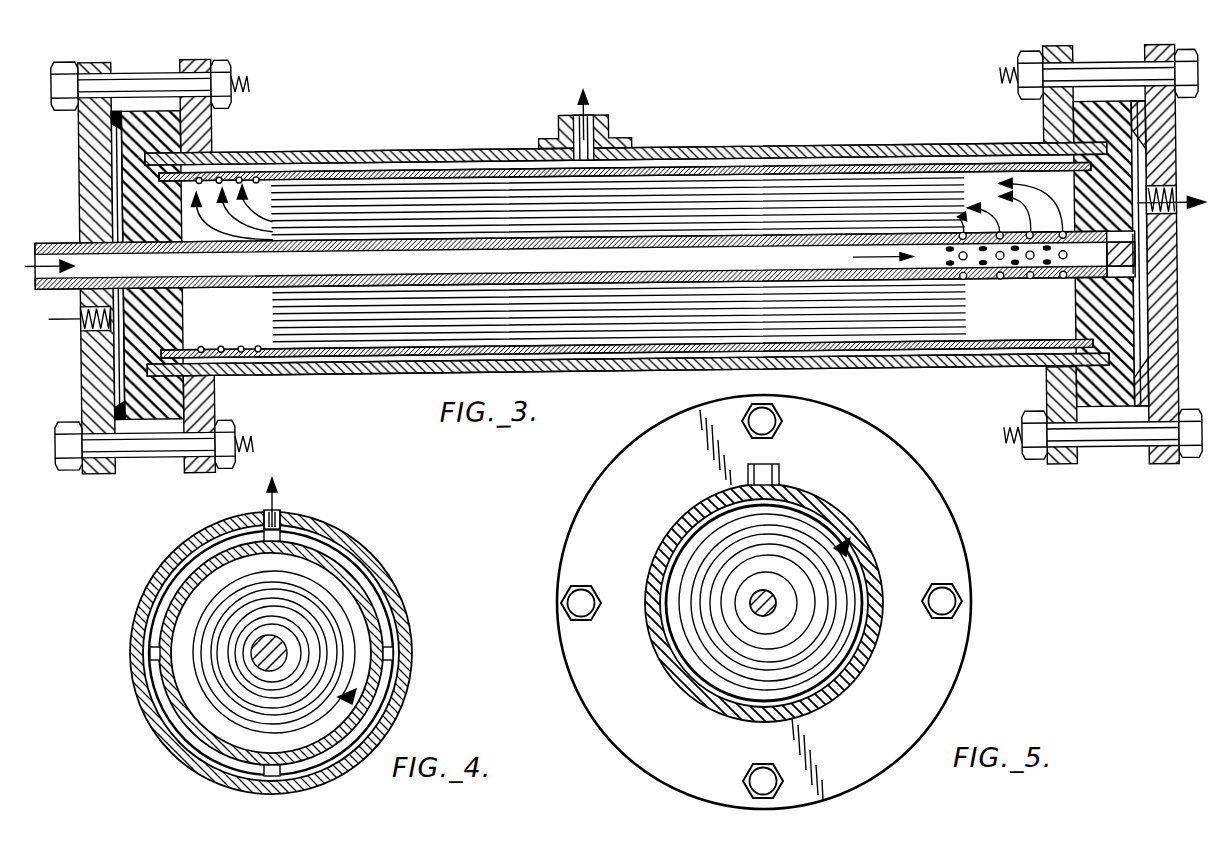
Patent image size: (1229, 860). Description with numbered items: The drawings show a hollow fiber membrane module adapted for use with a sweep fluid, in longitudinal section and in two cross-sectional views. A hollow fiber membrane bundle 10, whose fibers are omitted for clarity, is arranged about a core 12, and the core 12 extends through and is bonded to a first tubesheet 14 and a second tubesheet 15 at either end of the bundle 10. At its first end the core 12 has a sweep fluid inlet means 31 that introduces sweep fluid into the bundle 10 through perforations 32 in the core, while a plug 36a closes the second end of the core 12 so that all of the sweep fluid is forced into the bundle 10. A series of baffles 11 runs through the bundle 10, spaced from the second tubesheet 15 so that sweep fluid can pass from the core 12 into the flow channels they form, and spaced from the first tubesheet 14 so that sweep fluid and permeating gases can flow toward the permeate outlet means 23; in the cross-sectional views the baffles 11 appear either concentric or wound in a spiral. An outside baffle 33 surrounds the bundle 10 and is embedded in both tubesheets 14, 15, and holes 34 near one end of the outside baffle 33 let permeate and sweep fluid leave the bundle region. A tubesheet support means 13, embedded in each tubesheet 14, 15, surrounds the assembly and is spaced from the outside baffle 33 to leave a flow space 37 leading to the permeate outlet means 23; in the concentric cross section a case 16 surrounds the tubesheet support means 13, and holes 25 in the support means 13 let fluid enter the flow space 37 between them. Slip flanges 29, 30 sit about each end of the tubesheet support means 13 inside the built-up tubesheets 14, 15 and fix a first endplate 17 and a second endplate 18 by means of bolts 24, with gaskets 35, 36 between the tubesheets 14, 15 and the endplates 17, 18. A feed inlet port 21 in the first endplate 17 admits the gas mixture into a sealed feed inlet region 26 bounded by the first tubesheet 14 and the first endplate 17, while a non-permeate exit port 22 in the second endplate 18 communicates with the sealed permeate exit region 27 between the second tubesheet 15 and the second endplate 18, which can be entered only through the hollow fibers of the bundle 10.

In FIG. 3, the hollow fiber membrane bundle 10 is at (968, 204).
In FIG. 4, the hollow fiber membrane bundle 10 is at (360, 697).
In FIG. 5, the hollow fiber membrane bundle 10 is at (845, 545).
In FIG. 3, the baffles 11 is at (425, 215).
In FIG. 4, the baffles 11 is at (220, 662).
In FIG. 5, the baffles 11 is at (840, 626).
In FIG. 3, the core 12 is at (65, 283).
In FIG. 4, the core 12 is at (290, 658).
In FIG. 5, the core 12 is at (775, 606).
In FIG. 3, the tubesheet support means 13 is at (940, 148).
In FIG. 4, the tubesheet support means 13 is at (385, 573).
In FIG. 5, the tubesheet support means 13 is at (848, 515).
In FIG. 3, the first tubesheet 14 is at (128, 218).
In FIG. 3, the second tubesheet 15 is at (1118, 346).
In FIG. 4, the case 16 is at (327, 524).
In FIG. 3, the first endplate 17 is at (85, 155).
In FIG. 3, the second endplate 18 is at (1172, 321).
In FIG. 3, the feed inlet port 21 is at (80, 326).
In FIG. 3, the non-permeate exit port 22 is at (1188, 202).
In FIG. 3, the permeate outlet means 23 is at (590, 112).
In FIG. 4, the permeate outlet means 23 is at (278, 510).
In FIG. 5, the permeate outlet means 23 is at (778, 466).
In FIG. 3, the bolts 24 is at (1032, 78).
In FIG. 5, the bolts 24 is at (962, 601).
In FIG. 4, the holes 25 is at (175, 562).
In FIG. 3, the feed inlet region 26 is at (118, 190).
In FIG. 3, the permeate exit region 27 is at (1143, 294).
In FIG. 3, the slip flange 29 is at (205, 122).
In FIG. 5, the slip flange 29 is at (659, 495).
In FIG. 3, the slip flange 30 is at (1046, 126).
In FIG. 5, the slip flange 30 is at (952, 560).
In FIG. 3, the sweep fluid inlet means 31 is at (37, 252).
In FIG. 3, the perforations in the core 32 is at (1066, 284).
In FIG. 3, the outside baffle 33 is at (673, 170).
In FIG. 3, the holes 34 is at (240, 170).
In FIG. 3, the gasket 35 is at (116, 111).
In FIG. 3, the gasket 36 is at (1146, 140).
In FIG. 3, the plug 36a is at (1136, 258).
In FIG. 3, the flow space 37 is at (763, 162).
In FIG. 4, the flow space 37 is at (392, 619).